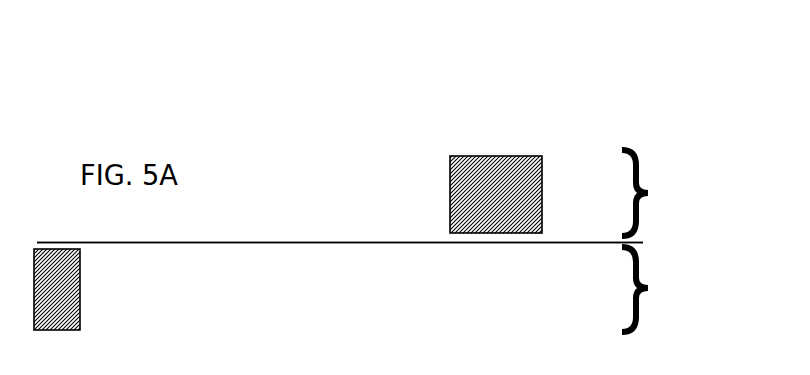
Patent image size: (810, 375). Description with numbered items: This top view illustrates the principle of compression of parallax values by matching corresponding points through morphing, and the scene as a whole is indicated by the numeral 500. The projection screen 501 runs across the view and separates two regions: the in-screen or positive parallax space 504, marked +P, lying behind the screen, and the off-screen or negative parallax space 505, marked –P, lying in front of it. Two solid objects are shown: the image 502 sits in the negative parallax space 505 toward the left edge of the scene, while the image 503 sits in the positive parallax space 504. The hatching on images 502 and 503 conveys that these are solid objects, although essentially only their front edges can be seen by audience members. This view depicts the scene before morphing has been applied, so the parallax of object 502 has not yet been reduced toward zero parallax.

The screen arrangement 500 is at (172, 99).
The projection screen 501 is at (460, 248).
The image 502 is at (86, 288).
The image 503 is at (443, 195).
The positive parallax space 504 is at (642, 160).
The negative parallax space 505 is at (642, 262).